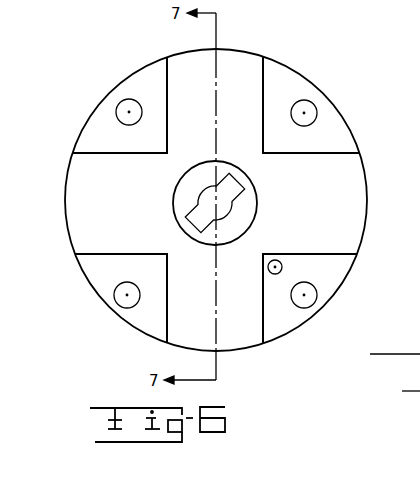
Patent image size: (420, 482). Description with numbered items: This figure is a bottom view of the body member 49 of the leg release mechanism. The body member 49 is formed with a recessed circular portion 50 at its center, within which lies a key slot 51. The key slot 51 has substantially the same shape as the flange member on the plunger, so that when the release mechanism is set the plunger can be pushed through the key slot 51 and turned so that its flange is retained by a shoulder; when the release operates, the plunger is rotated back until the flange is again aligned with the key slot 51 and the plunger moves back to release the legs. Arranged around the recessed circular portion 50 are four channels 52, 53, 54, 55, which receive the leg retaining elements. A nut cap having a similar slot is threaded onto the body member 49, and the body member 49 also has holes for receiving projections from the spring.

The body member 49 is at (337, 108).
The recessed circular portion 50 is at (250, 188).
The key slot 51 is at (237, 196).
The channel 52 is at (238, 345).
The channel 53 is at (80, 210).
The channel 54 is at (236, 66).
The channel 55 is at (355, 229).